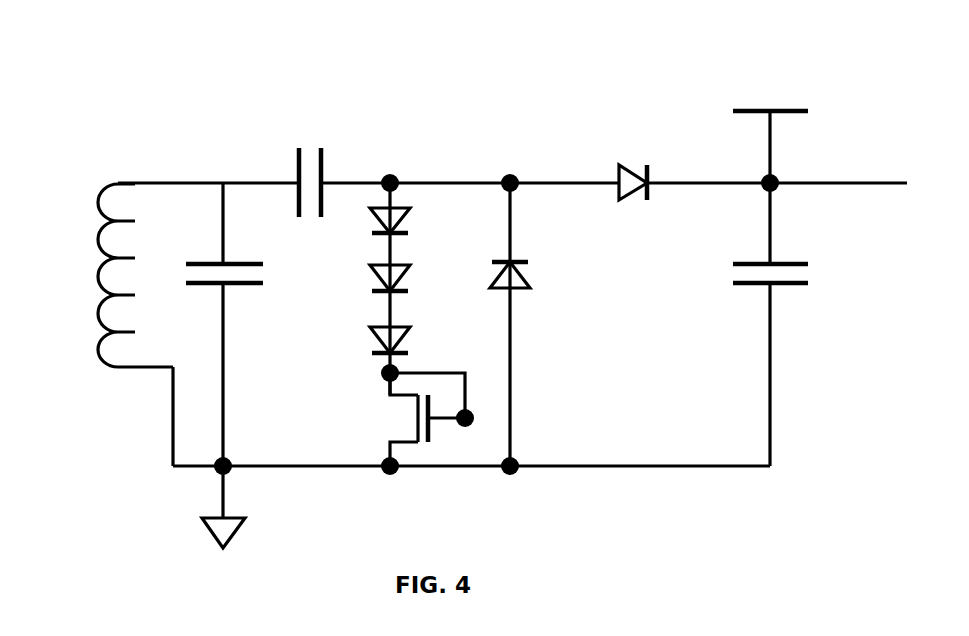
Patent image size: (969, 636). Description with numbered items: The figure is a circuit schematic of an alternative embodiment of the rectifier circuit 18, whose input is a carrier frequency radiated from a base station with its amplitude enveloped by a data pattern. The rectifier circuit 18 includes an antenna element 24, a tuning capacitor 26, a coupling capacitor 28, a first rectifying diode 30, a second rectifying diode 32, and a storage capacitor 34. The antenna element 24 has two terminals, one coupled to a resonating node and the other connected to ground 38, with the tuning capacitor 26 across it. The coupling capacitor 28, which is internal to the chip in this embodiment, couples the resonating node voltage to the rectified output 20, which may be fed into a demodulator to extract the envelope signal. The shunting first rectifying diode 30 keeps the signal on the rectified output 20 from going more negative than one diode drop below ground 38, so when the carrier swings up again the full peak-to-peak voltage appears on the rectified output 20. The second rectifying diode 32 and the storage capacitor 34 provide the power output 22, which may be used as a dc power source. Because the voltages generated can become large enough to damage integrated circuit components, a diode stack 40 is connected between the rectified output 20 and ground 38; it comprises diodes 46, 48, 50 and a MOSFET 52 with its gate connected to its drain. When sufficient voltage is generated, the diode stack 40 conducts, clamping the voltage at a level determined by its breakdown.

The rectifier circuit 18 is at (513, 92).
The rectified output 20 is at (506, 175).
The power output 22 is at (779, 190).
The antenna element 24 is at (101, 347).
The tuning capacitor 26 is at (232, 285).
The coupling capacitor 28 is at (298, 172).
The first rectifying diode 30 is at (527, 282).
The second rectifying diode 32 is at (632, 168).
The storage capacitor 34 is at (785, 285).
The ground 38 is at (238, 535).
The diode stack 40 is at (302, 341).
The diode 46 is at (410, 215).
The diode 48 is at (410, 272).
The diode 50 is at (410, 335).
The MOSFET 52 is at (386, 388).